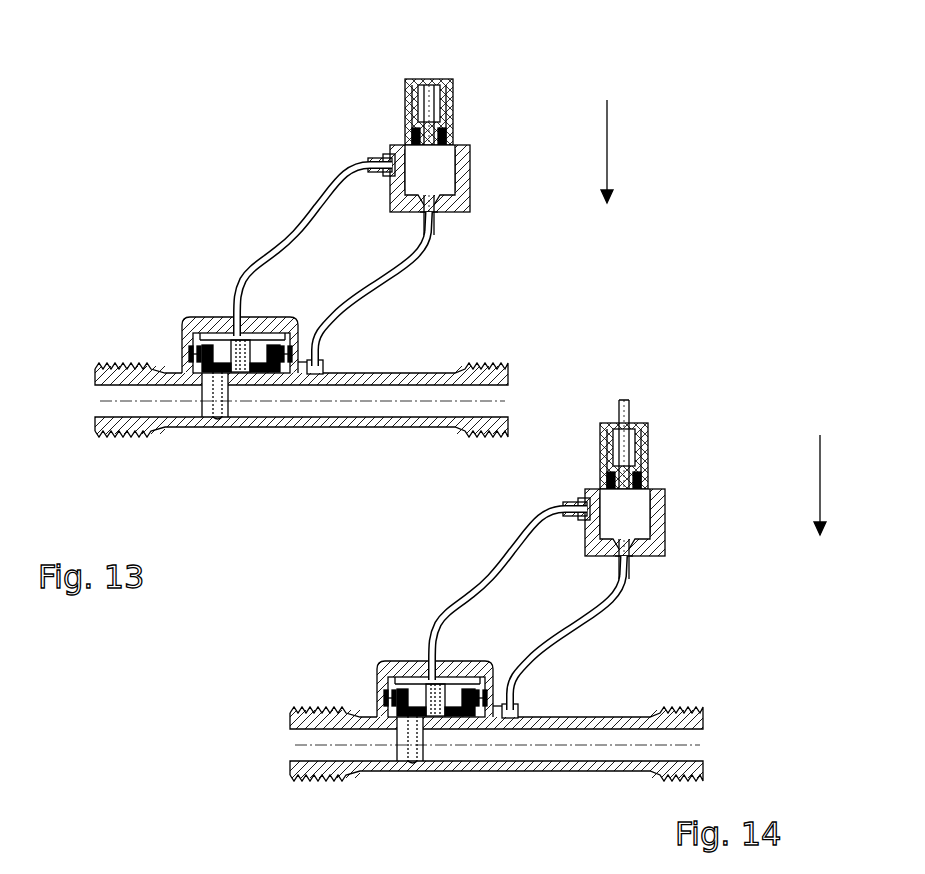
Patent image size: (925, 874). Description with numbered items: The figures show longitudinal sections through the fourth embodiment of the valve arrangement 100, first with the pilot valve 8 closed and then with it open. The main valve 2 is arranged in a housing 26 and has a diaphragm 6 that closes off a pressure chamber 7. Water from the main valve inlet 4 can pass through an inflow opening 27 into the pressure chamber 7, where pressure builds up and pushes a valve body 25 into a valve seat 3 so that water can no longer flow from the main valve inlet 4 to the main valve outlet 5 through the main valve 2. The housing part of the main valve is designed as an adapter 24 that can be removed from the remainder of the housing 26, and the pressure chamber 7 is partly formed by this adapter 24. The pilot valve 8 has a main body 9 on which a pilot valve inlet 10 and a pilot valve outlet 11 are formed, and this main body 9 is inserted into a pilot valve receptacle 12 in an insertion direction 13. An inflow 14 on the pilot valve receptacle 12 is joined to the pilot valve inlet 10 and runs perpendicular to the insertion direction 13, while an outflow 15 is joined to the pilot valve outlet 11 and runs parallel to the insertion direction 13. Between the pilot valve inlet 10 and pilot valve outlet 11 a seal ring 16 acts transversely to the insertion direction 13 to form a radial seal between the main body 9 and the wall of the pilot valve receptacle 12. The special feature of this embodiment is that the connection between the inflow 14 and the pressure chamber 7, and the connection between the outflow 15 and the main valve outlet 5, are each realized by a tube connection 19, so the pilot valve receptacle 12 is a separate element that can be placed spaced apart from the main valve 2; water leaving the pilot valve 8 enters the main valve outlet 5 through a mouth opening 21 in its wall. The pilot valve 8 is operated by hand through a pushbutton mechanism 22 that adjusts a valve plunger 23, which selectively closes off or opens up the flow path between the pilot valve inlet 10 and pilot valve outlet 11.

In FIG. 13, the valve arrangement 100 is at (678, 185).
In FIG. 14, the valve arrangement 100 is at (545, 334).
In FIG. 13, the main valve 2 is at (181, 345).
In FIG. 14, the main valve 2 is at (377, 682).
In FIG. 13, the valve seat 3 is at (222, 317).
In FIG. 14, the valve seat 3 is at (417, 622).
In FIG. 13, the main valve inlet 4 is at (113, 400).
In FIG. 14, the main valve inlet 4 is at (363, 744).
In FIG. 13, the main valve outlet 5 is at (392, 398).
In FIG. 14, the main valve outlet 5 is at (599, 762).
In FIG. 13, the diaphragm 6 is at (262, 375).
In FIG. 14, the diaphragm 6 is at (478, 742).
In FIG. 13, the pressure chamber 7 is at (190, 317).
In FIG. 14, the pressure chamber 7 is at (404, 652).
In FIG. 13, the pilot valve 8 is at (410, 157).
In FIG. 14, the pilot valve 8 is at (620, 487).
In FIG. 13, the main body 9 is at (450, 108).
In FIG. 14, the main body 9 is at (675, 456).
In FIG. 13, the pilot valve inlet 10 is at (395, 150).
In FIG. 14, the pilot valve inlet 10 is at (552, 491).
In FIG. 13, the pilot valve outlet 11 is at (440, 215).
In FIG. 14, the pilot valve outlet 11 is at (650, 578).
In FIG. 13, the pilot valve receptacle 12 is at (468, 185).
In FIG. 14, the pilot valve receptacle 12 is at (675, 527).
In FIG. 13, the insertion direction 13 is at (596, 151).
In FIG. 14, the insertion direction 13 is at (809, 485).
In FIG. 13, the inflow 14 is at (368, 165).
In FIG. 14, the inflow 14 is at (532, 491).
In FIG. 13, the outflow 15 is at (433, 235).
In FIG. 14, the outflow 15 is at (646, 594).
In FIG. 13, the seal ring 16 is at (412, 190).
In FIG. 14, the seal ring 16 is at (597, 522).
In FIG. 13, the tube connection 19 is at (322, 208).
In FIG. 14, the tube connection 19 is at (529, 609).
In FIG. 13, the mouth opening 21 is at (312, 383).
In FIG. 14, the mouth opening 21 is at (524, 762).
In FIG. 13, the pushbutton mechanism 22 is at (428, 80).
In FIG. 14, the pushbutton mechanism 22 is at (612, 449).
In FIG. 13, the valve plunger 23 is at (455, 160).
In FIG. 14, the valve plunger 23 is at (659, 494).
In FIG. 13, the adapter 24 is at (205, 317).
In FIG. 14, the adapter 24 is at (423, 644).
In FIG. 13, the valve body 25 is at (219, 420).
In FIG. 14, the valve body 25 is at (410, 776).
In FIG. 13, the housing 26 is at (214, 418).
In FIG. 14, the housing 26 is at (318, 695).
In FIG. 13, the inflow opening 27 is at (190, 366).
In FIG. 14, the inflow opening 27 is at (328, 758).